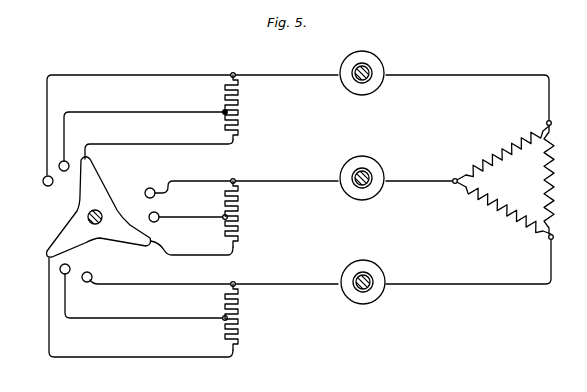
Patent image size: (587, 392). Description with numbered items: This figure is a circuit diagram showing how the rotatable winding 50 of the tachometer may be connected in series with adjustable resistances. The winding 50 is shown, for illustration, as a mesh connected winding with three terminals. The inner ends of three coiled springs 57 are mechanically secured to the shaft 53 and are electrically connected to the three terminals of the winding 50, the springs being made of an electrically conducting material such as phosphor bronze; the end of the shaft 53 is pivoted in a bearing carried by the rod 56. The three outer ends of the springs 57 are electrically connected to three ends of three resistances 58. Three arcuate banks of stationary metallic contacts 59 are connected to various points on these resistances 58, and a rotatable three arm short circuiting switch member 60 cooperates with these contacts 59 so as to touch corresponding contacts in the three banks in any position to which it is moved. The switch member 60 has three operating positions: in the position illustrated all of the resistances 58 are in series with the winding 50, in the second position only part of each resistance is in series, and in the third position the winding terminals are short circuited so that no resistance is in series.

The winding 50 is at (496, 151).
The shaft 53 is at (364, 80).
The rod 56 is at (101, 208).
The coiled springs 57 is at (378, 58).
The resistances 58 is at (242, 118).
The stationary metallic contacts 59 is at (45, 184).
The three arm short circuiting switch member 60 is at (72, 226).